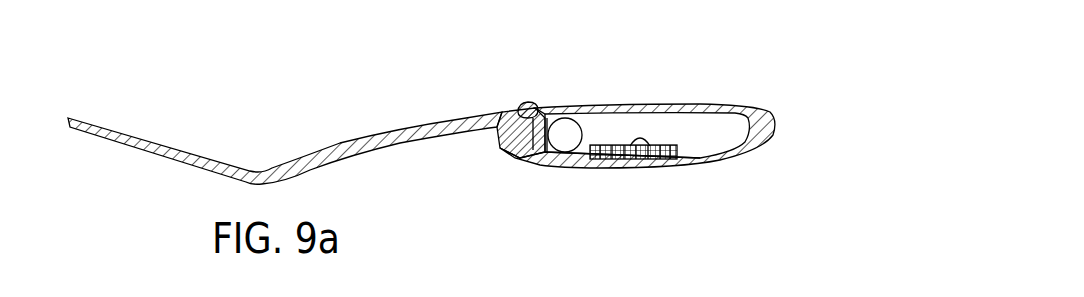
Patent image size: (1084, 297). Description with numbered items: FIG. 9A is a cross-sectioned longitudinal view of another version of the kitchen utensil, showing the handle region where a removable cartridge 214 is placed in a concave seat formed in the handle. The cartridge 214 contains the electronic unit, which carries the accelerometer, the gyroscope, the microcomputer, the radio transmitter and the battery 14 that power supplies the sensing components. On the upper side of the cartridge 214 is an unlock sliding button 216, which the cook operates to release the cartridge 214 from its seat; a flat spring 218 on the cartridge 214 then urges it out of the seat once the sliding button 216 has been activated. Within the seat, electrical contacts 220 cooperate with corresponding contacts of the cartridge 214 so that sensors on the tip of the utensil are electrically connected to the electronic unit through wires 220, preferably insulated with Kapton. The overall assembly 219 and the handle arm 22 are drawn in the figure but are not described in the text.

The eyeglass temple assembly 219 is at (408, 97).
The temple arm 22 is at (448, 148).
The flat spring 218 is at (503, 155).
The unlock sliding button 216 is at (528, 111).
The cartridge 214 is at (692, 103).
The battery 14 is at (569, 143).
The electrical contacts 220 is at (658, 148).